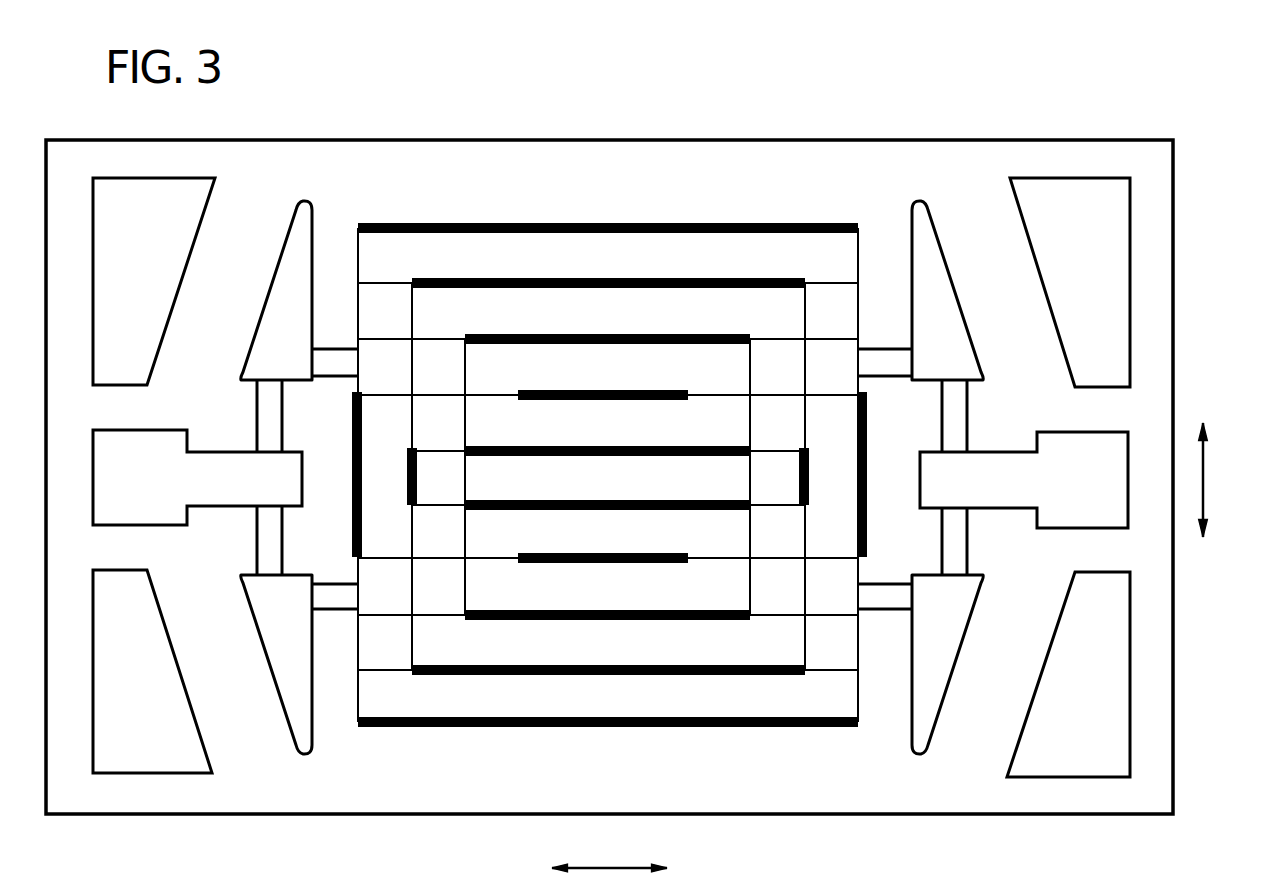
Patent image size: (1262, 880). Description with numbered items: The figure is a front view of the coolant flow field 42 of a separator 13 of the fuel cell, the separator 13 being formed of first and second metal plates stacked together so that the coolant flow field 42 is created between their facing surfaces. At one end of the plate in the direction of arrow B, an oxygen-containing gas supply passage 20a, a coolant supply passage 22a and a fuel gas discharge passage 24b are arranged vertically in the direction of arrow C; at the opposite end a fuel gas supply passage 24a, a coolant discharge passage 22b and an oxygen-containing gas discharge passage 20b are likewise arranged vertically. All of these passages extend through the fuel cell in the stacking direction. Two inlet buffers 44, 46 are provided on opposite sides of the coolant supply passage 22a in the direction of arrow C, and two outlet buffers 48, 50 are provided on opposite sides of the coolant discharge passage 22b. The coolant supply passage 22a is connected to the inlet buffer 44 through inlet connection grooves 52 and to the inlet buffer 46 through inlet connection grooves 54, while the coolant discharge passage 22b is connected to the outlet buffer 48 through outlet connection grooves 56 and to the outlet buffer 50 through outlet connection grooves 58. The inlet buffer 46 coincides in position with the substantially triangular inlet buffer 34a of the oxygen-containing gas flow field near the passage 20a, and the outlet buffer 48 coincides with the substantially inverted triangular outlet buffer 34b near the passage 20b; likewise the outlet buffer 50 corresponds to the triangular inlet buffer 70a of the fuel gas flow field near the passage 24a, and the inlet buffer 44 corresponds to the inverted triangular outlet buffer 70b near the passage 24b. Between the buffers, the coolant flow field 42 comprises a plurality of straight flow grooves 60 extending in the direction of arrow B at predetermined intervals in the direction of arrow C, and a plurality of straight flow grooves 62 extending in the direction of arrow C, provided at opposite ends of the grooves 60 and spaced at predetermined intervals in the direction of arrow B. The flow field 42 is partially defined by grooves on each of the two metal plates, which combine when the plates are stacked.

The separator 13 is at (317, 104).
The coolant flow field 42 is at (802, 121).
The oxygen-containing gas supply passage 20a is at (154, 281).
The oxygen-containing gas discharge passage 20b is at (1068, 674).
The fuel gas supply passage 24a is at (1070, 282).
The fuel gas discharge passage 24b is at (152, 671).
The coolant supply passage 22a is at (197, 477).
The coolant discharge passage 22b is at (1024, 480).
The inlet buffer 46 is at (204, 290).
The inlet buffer 34a is at (245, 356).
The outlet buffer 50 is at (1023, 290).
The inlet buffer 70a is at (976, 357).
The inlet buffer 44 is at (204, 664).
The outlet buffer 70b is at (247, 598).
The outlet buffer 48 is at (1023, 664).
The outlet buffer 34b is at (981, 605).
The inlet connection grooves 52 is at (257, 539).
The inlet connection grooves 54 is at (257, 424).
The outlet connection grooves 56 is at (967, 539).
The outlet connection grooves 58 is at (967, 424).
The straight flow grooves 60 is at (586, 676).
The straight flow grooves 62 is at (362, 500).